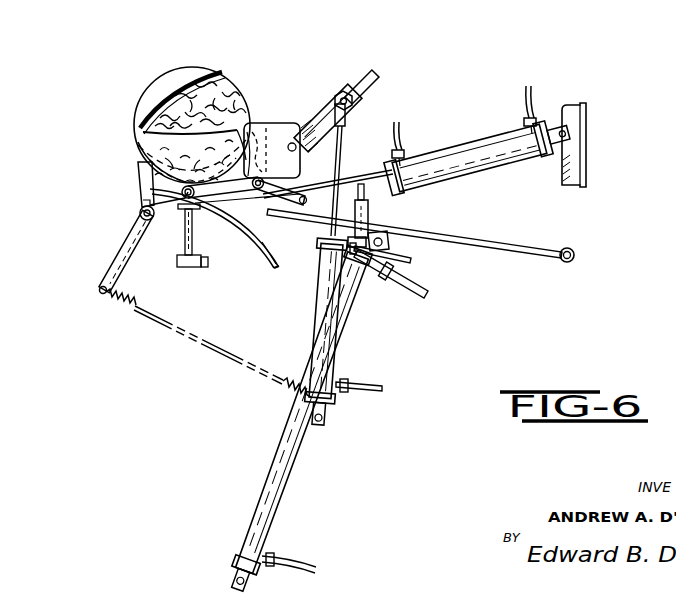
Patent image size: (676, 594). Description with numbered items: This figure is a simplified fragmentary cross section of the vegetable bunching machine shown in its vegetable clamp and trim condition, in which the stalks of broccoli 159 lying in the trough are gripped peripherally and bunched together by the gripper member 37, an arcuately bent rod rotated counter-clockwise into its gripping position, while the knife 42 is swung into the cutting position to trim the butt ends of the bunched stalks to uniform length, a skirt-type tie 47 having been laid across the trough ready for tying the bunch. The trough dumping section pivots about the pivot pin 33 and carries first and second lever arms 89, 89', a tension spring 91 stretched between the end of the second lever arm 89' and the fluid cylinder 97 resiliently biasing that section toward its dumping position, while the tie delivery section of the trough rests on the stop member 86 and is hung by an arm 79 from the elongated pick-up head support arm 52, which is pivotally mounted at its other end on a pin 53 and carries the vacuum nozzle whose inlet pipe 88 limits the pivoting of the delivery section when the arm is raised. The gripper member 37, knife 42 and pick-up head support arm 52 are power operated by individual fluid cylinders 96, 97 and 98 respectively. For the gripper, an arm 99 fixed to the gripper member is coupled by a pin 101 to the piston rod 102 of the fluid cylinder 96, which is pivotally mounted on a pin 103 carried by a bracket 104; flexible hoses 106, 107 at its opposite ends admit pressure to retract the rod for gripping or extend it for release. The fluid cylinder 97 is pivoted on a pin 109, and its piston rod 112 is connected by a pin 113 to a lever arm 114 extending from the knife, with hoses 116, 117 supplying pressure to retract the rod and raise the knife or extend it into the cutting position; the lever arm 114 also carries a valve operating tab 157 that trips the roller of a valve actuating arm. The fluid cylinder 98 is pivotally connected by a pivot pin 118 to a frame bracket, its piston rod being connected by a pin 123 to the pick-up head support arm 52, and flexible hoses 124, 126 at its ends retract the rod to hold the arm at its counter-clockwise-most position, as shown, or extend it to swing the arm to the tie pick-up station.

The pivot pin 33 is at (289, 150).
The gripper member 37 is at (191, 87).
The knife 42 is at (260, 130).
The skirt-type ties 47 is at (146, 151).
The pick-up head support arm 52 is at (528, 243).
The pin 53 is at (577, 259).
The arm 79 is at (235, 198).
The stop member 86 is at (256, 236).
The inlet pipe 88 is at (185, 266).
The first lever arm 89 is at (254, 272).
The second lever arm 89' is at (100, 251).
The tension spring 91 is at (190, 337).
The fluid cylinder 96 is at (472, 148).
The fluid cylinder 97 is at (318, 305).
The fluid cylinder 98 is at (352, 320).
The arm 99 is at (311, 198).
The pin 101 is at (305, 210).
The piston rod 102 is at (372, 189).
The pin 103 is at (578, 126).
The bracket 104 is at (589, 168).
The flexible hose 106 is at (400, 137).
The flexible hose 107 is at (531, 102).
The pin 109 is at (324, 428).
The piston rod 112 is at (338, 157).
The pin 113 is at (354, 106).
The lever arm 114 is at (319, 110).
The hose 116 is at (406, 262).
The hose 117 is at (385, 388).
The pivot pin 118 is at (229, 580).
The pin 123 is at (388, 243).
The flexible hose 124 is at (422, 298).
The flexible hose 126 is at (304, 556).
The valve operating tab 157 is at (366, 75).
The stalks of broccoli 159 is at (174, 110).